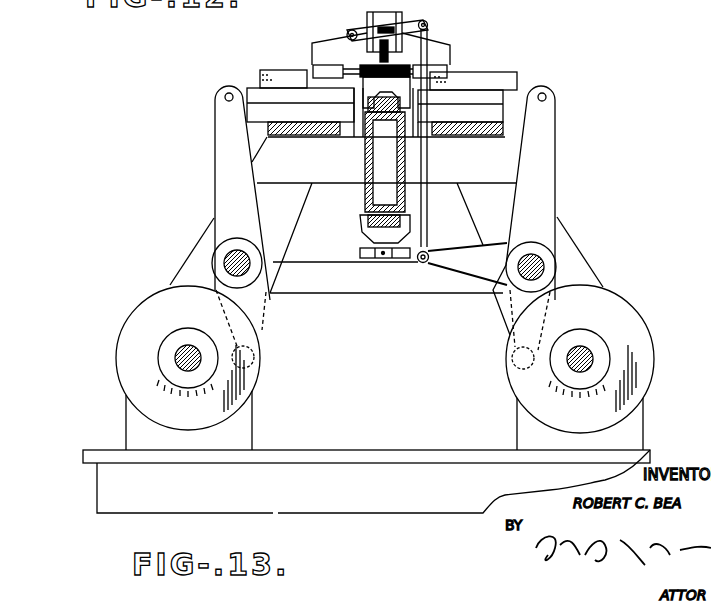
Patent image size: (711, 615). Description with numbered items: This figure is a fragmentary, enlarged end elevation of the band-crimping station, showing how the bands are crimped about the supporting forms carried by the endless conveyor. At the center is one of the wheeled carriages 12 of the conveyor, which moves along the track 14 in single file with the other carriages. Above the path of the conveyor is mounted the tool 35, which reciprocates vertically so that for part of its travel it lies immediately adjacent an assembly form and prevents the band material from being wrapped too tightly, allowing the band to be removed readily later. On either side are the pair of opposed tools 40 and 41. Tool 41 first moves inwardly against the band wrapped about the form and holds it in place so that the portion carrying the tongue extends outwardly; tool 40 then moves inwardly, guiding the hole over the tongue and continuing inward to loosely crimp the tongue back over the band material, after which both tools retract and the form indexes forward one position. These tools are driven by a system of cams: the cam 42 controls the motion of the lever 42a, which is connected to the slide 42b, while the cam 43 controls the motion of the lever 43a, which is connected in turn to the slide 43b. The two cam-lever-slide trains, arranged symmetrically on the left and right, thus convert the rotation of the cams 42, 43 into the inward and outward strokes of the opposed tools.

The wheeled carriage 12 is at (405, 95).
The track 14 is at (363, 113).
The tool 35 is at (388, 62).
The tool 40 is at (412, 80).
The tool 41 is at (350, 60).
The cam 42 is at (122, 369).
The lever 42a is at (215, 183).
The slide 42b is at (252, 90).
The cam 43 is at (643, 330).
The lever 43a is at (557, 175).
The slide 43b is at (525, 92).